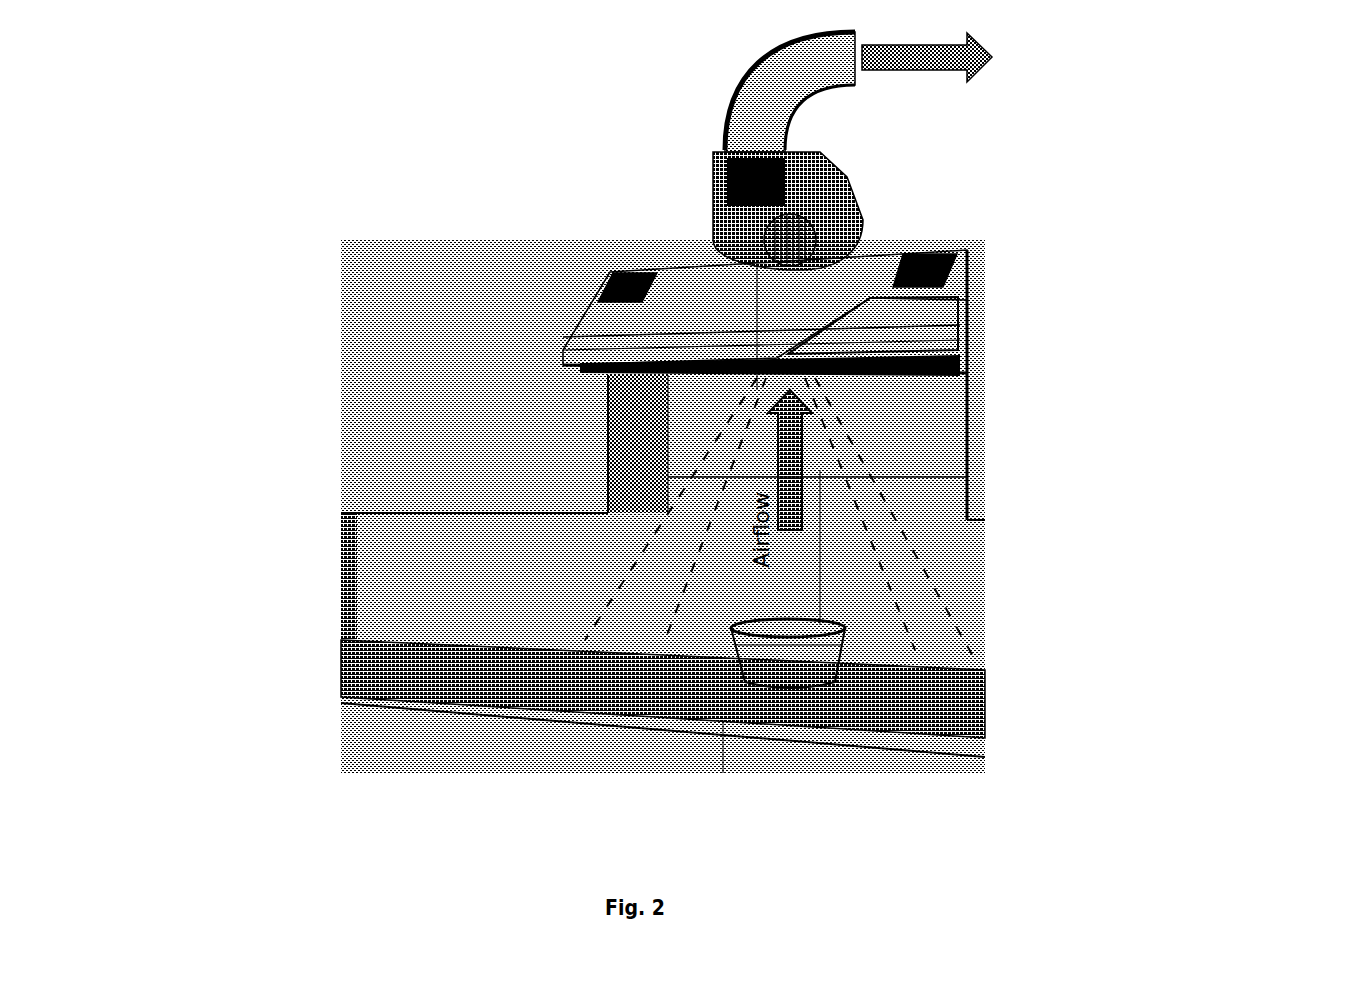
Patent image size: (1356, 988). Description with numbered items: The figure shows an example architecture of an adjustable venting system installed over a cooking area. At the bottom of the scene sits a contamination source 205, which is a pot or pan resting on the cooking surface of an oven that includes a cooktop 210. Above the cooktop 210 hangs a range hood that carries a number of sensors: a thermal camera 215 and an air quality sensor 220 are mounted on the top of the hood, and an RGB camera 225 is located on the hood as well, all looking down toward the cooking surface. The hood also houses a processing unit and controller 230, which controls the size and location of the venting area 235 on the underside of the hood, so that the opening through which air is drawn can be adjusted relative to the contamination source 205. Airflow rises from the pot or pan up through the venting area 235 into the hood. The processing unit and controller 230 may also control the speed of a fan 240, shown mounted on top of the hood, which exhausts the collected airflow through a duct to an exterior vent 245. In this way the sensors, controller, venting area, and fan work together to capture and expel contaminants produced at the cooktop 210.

The contamination source 205 is at (858, 645).
The cooktop 210 is at (692, 687).
The thermal camera 215 is at (1272, 288).
The air quality sensor 220 is at (1290, 346).
The RGB camera 225 is at (1217, 404).
The processing unit and controller 230 is at (660, 317).
The venting area 235 is at (607, 385).
The fan 240 is at (852, 184).
The exterior vent 245 is at (1250, 70).